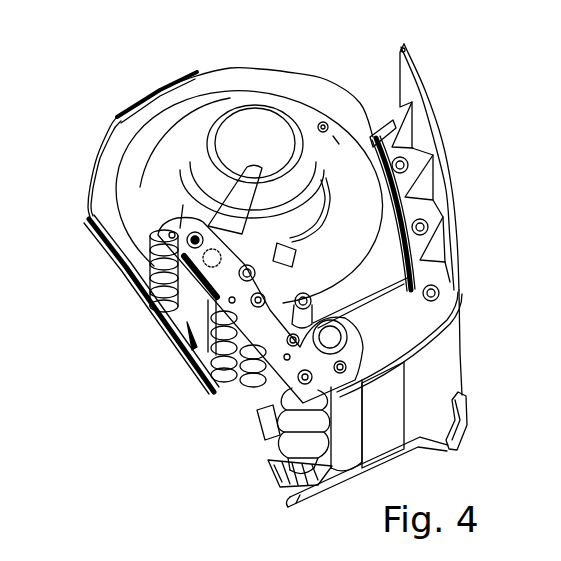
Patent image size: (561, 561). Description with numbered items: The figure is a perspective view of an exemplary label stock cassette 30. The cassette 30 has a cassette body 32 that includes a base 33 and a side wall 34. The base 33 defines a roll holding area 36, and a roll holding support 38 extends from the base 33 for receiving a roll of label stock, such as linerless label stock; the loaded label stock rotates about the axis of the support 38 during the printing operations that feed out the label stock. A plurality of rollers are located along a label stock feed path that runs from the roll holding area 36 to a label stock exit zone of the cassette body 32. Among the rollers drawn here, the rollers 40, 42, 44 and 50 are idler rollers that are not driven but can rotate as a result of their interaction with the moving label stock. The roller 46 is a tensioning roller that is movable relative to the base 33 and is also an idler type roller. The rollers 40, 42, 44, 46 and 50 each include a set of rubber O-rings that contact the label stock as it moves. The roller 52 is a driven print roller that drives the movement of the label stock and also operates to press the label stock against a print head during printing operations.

The label stock cassette 30 is at (463, 68).
The cassette body 32 is at (229, 64).
The base 33 is at (115, 160).
The side wall 34 is at (441, 140).
The roll holding area 36 is at (309, 115).
The roll holding support 38 is at (256, 125).
The roller 40 is at (157, 283).
The roller 42 is at (220, 342).
The roller 44 is at (213, 392).
The tensioning roller 46 is at (308, 307).
The roller 50 is at (273, 398).
The driven print roller 52 is at (262, 436).